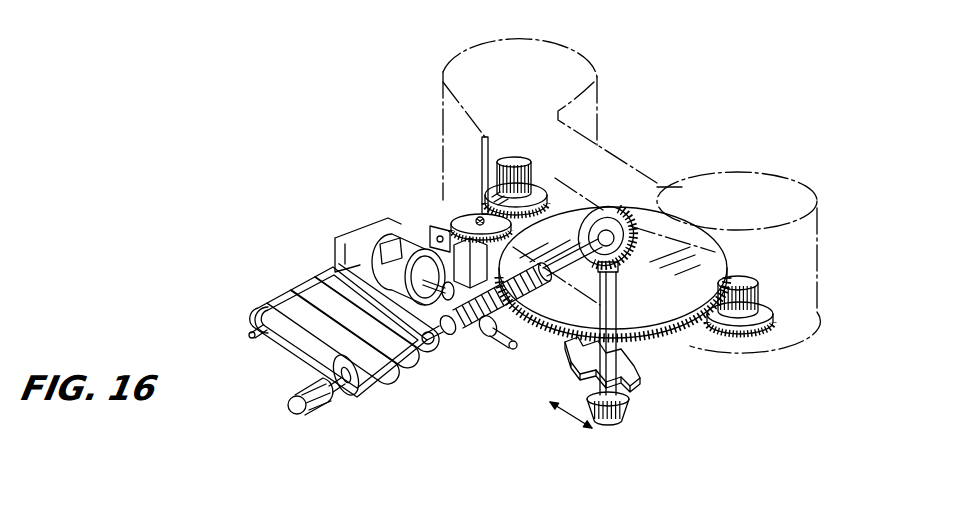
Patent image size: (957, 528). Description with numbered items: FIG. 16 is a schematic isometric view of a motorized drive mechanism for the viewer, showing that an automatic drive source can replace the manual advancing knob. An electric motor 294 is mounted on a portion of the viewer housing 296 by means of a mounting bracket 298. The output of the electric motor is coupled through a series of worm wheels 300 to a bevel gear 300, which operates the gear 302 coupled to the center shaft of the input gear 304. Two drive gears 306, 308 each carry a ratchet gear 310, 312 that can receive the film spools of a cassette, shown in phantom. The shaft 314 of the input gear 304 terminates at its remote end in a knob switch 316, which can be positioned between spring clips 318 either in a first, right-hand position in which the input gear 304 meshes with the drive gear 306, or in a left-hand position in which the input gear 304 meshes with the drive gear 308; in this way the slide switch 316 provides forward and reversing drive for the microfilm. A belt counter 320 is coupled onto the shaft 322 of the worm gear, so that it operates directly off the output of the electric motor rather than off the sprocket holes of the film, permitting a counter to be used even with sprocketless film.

The electric motor 294 is at (345, 250).
The viewer housing 296 is at (368, 232).
The mounting bracket 298 is at (436, 238).
The worm wheels and bevel gear 300 is at (600, 207).
The gear 302 is at (640, 230).
The input gear 304 is at (669, 312).
The drive gear 306 is at (764, 325).
The drive gear 308 is at (538, 193).
The ratchet gear 310 is at (745, 284).
The ratchet gear 312 is at (517, 160).
The shaft 314 is at (622, 350).
The knob switch 316 is at (618, 420).
The spring clips 318 is at (566, 352).
The belt counter 320 is at (365, 398).
The shaft of the worm gear 322 is at (436, 358).